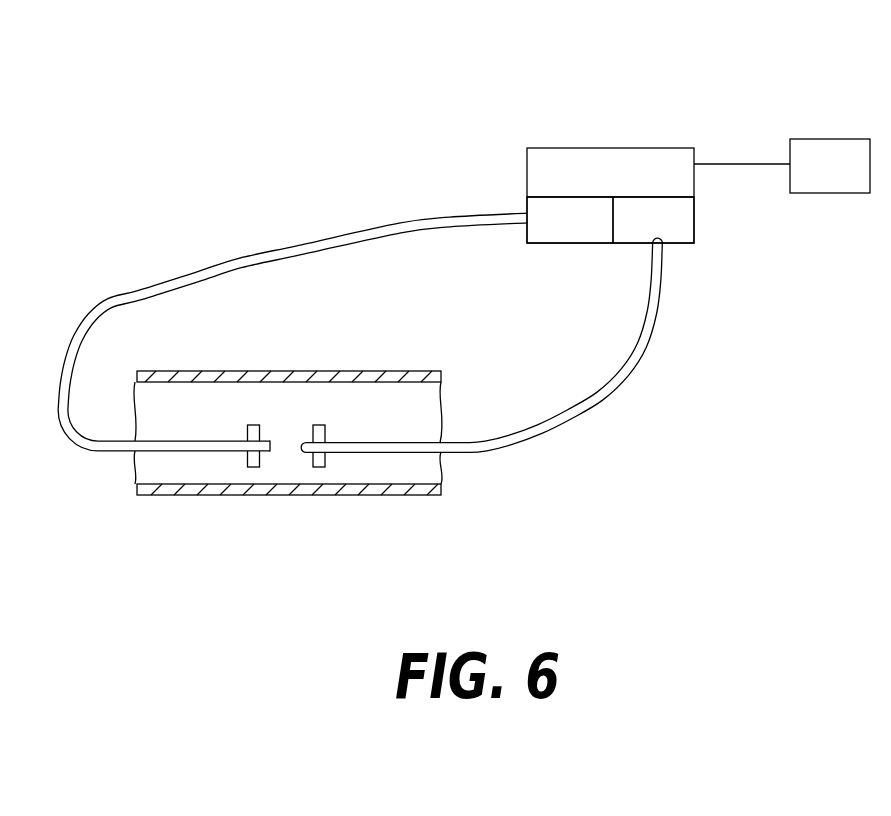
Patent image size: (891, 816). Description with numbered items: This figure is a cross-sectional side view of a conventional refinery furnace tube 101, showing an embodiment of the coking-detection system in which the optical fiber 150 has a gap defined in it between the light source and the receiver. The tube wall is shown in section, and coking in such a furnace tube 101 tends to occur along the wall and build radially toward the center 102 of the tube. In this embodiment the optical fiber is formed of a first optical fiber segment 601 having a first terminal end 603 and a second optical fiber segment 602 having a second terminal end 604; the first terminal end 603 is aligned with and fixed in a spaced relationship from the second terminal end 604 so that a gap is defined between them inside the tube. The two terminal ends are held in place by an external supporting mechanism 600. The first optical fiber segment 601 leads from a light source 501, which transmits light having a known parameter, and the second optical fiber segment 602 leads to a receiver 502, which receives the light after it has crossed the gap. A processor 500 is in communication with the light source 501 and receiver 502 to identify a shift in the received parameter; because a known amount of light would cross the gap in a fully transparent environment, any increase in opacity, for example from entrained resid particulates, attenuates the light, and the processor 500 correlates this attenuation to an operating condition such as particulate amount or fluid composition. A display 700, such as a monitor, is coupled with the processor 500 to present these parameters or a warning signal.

The furnace tube 101 is at (343, 371).
The center of the tube 102 is at (410, 470).
The optical fiber 150 is at (420, 446).
The processor 500 is at (600, 148).
The light source 501 is at (526, 211).
The receiver 502 is at (692, 213).
The external supporting mechanism 600 is at (313, 425).
The first optical fiber segment 601 is at (157, 446).
The second optical fiber segment 602 is at (383, 443).
The first terminal end 603 is at (251, 467).
The second terminal end 604 is at (307, 447).
The display 700 is at (828, 139).